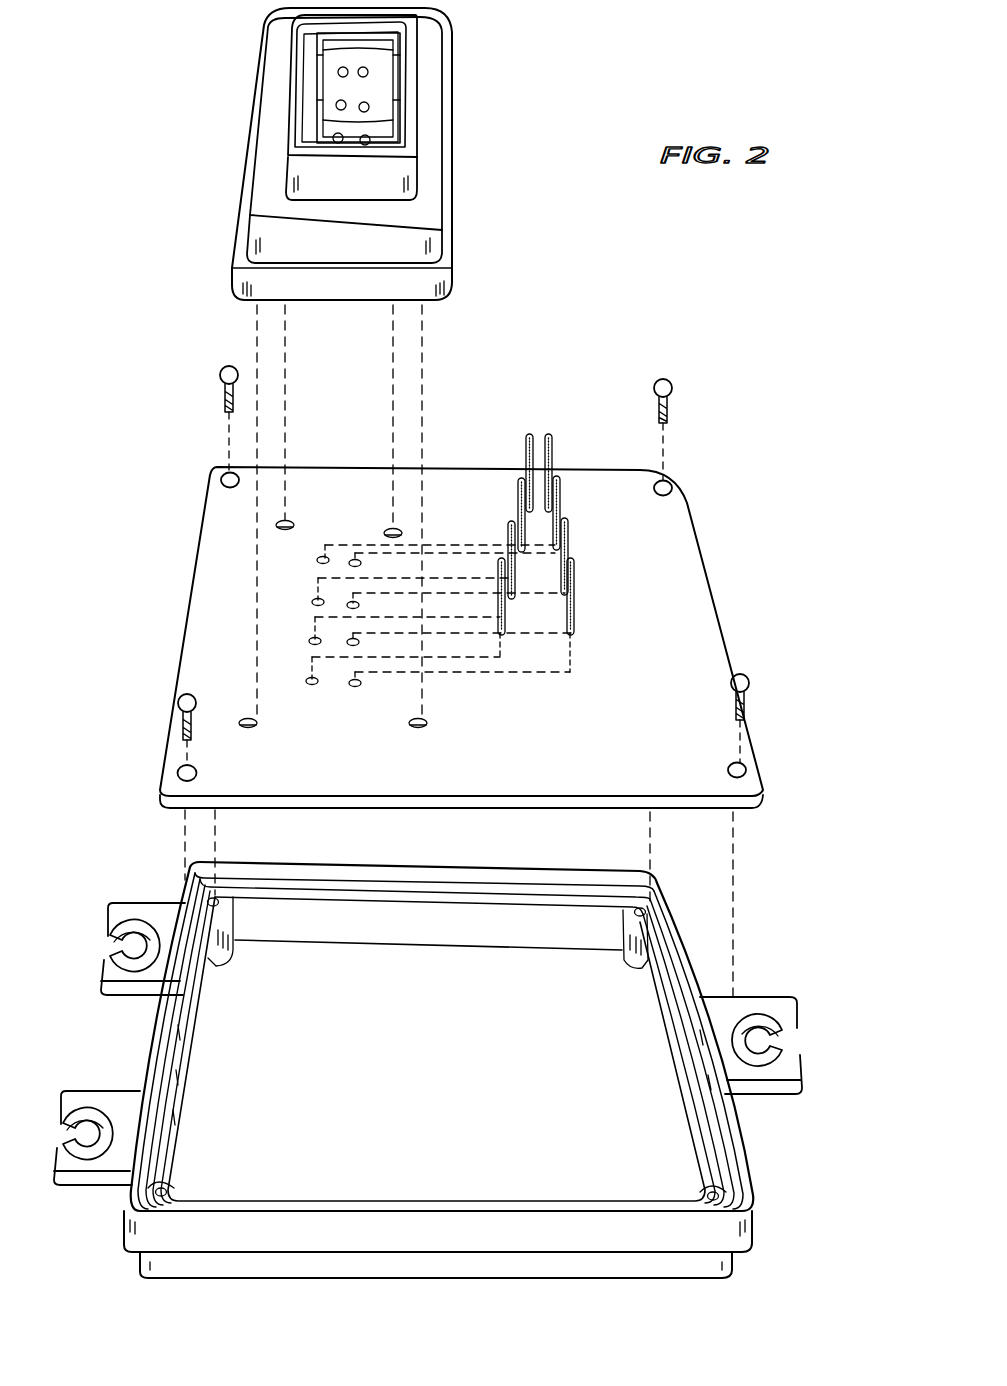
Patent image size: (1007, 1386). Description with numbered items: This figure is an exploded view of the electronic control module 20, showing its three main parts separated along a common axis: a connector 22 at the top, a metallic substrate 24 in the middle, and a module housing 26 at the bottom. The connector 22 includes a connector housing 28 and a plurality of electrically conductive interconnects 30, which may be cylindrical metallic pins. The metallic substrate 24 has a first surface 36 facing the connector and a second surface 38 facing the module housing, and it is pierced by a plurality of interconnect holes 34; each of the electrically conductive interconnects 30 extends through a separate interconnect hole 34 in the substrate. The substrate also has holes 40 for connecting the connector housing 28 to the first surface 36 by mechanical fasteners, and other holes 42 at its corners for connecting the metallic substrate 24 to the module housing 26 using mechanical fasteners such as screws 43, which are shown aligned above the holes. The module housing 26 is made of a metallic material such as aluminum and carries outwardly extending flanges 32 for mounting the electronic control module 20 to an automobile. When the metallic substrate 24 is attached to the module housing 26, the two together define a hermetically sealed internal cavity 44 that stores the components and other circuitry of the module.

The electronic control module 20 is at (722, 257).
The connector 22 is at (456, 97).
The metallic substrate 24 is at (713, 590).
The module housing 26 is at (757, 1188).
The connector housing 28 is at (440, 163).
The electrically conductive interconnects 30 is at (549, 437).
The outwardly extending flanges 32 is at (122, 903).
The interconnect holes 34 is at (353, 558).
The first surface 36 is at (712, 660).
The second surface 38 is at (700, 812).
The holes 40 is at (400, 531).
The other holes 42 is at (222, 487).
The screws 43 is at (220, 375).
The hermetically sealed internal cavity 44 is at (262, 1172).